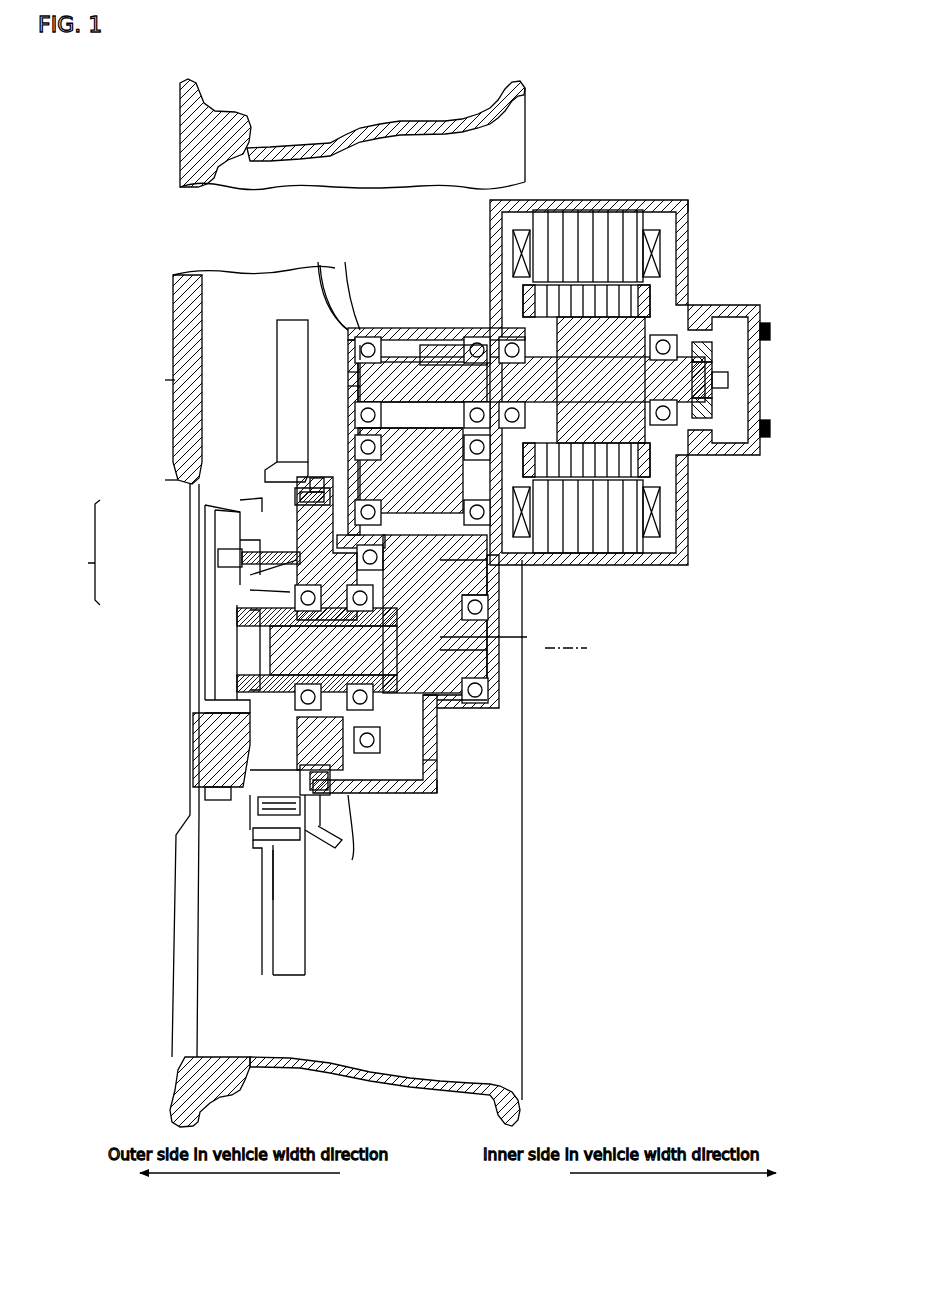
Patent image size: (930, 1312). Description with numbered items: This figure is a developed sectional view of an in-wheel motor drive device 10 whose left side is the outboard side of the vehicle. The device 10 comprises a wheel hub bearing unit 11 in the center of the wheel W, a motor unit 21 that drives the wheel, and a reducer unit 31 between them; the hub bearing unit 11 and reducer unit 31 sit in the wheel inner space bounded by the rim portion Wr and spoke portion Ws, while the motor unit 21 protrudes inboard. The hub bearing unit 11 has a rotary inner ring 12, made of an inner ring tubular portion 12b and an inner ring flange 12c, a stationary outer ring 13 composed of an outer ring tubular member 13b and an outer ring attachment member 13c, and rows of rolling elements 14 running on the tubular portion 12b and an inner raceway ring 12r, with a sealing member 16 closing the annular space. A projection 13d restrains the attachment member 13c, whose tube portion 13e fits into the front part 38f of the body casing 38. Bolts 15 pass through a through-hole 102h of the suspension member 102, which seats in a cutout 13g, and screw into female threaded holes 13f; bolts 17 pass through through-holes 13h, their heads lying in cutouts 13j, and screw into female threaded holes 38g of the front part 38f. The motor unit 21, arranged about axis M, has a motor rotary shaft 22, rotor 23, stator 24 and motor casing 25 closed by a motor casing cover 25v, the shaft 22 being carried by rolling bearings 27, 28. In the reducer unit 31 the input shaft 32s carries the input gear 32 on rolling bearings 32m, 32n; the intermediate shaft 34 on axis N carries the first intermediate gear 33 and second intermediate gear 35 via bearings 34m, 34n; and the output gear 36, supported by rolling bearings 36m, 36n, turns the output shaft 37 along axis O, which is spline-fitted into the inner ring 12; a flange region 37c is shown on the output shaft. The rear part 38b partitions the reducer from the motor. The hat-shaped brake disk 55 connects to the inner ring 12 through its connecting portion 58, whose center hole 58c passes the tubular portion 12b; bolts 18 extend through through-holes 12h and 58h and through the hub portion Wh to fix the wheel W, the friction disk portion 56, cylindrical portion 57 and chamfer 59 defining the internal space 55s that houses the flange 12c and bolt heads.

The in-wheel motor drive device 10 is at (756, 186).
The wheel hub bearing unit 11 is at (252, 665).
The inner ring 12 is at (300, 630).
The inner ring tubular portion 12b is at (235, 656).
The inner ring flange 12c is at (238, 520).
The through-holes 12h is at (250, 545).
The inner raceway ring 12r is at (430, 712).
The outer ring 13 is at (86, 552).
The outer ring tubular member 13b is at (238, 610).
The outer ring attachment member 13c is at (245, 508).
The projection 13d is at (262, 595).
The tube portion 13e is at (506, 636).
The female threaded holes 13f is at (318, 490).
The cutout 13g is at (248, 505).
The through-holes 13h is at (352, 830).
The cutouts 13j is at (340, 770).
The rolling elements 14 is at (224, 700).
The bolts 15 is at (305, 503).
The sealing member 16 is at (224, 716).
The bolts 17 is at (222, 790).
The bolts 18 is at (216, 558).
The motor unit 21 is at (722, 276).
The motor rotary shaft 22 is at (714, 380).
The rotor 23 is at (636, 460).
The stator 24 is at (578, 222).
The motor casing 25 is at (646, 232).
The motor casing cover 25v is at (688, 515).
The rolling bearing 27 is at (492, 332).
The rolling bearing 28 is at (702, 330).
The reducer unit 31 is at (345, 370).
The input gear 32 is at (440, 340).
The rolling bearing 32m is at (370, 338).
The rolling bearing 32n is at (472, 340).
The input shaft 32s is at (355, 352).
The first intermediate gear 33 is at (425, 345).
The intermediate shaft 34 is at (365, 445).
The bearing 34m is at (360, 430).
The bearing 34n is at (478, 562).
The second intermediate gear 35 is at (345, 386).
The output gear 36 is at (405, 795).
The rolling bearing 36m is at (485, 580).
The rolling bearing 36n is at (485, 610).
The output shaft 37 is at (476, 660).
The output shaft flange 37c is at (480, 597).
The body casing 38 is at (350, 326).
The rear part 38b is at (500, 690).
The front part 38f is at (320, 263).
The female threaded holes 38g is at (328, 795).
The brake disk 55 is at (272, 974).
The internal space 55s is at (279, 796).
The friction disk portion 56 is at (274, 900).
The cylindrical portion 57 is at (262, 846).
The connecting portion 58 is at (253, 810).
The center hole 58c is at (256, 616).
The through-holes 58h is at (282, 562).
The chamfer 59 is at (255, 829).
The suspension member 102 is at (280, 466).
The through-hole 102h is at (300, 490).
The axis M is at (172, 380).
The axis N is at (176, 480).
The axis O is at (575, 648).
The wheel W is at (178, 86).
The rim portion Wr is at (527, 84).
The spoke portion Ws is at (174, 331).
The hub portion Wh is at (222, 741).